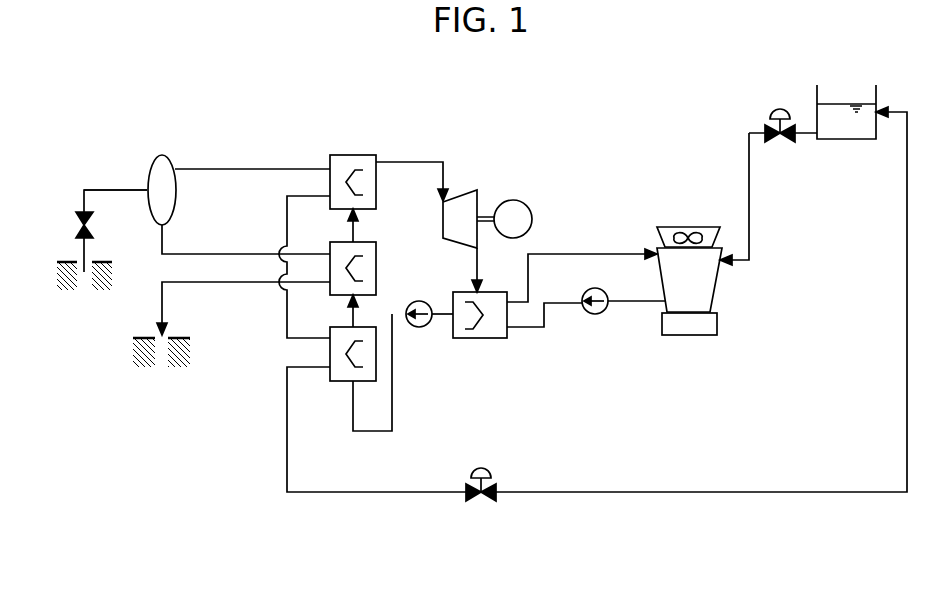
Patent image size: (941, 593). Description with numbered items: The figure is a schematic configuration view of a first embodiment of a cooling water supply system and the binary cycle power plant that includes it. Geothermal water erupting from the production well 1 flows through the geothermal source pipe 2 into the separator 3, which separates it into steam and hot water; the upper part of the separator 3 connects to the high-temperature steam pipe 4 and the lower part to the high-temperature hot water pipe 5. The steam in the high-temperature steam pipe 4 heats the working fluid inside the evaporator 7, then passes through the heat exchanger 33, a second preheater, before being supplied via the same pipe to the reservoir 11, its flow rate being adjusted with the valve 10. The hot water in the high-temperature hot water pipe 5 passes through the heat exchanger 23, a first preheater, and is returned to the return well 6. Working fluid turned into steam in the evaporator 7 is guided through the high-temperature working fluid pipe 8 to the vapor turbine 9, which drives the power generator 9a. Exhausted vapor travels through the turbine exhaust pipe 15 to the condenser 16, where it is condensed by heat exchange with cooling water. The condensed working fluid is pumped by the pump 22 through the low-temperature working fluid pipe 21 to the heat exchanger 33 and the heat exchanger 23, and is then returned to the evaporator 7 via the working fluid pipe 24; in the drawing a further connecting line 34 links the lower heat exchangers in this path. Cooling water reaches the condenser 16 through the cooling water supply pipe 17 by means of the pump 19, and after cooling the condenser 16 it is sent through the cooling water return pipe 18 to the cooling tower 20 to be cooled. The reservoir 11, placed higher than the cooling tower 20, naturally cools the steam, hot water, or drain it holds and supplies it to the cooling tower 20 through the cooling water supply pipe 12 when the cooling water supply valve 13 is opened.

The production well 1 is at (54, 203).
The geothermal source pipe 2 is at (118, 188).
The separator 3 is at (162, 155).
The high-temperature steam pipe 4 is at (208, 168).
The high-temperature hot water pipe 5 is at (213, 254).
The return well 6 is at (147, 322).
The evaporator 7 is at (351, 155).
The high-temperature working fluid pipe 8 is at (400, 162).
The vapor turbine 9 is at (443, 220).
The power generator 9a is at (532, 220).
The valve 10 is at (483, 470).
The reservoir 11 is at (843, 139).
The cooling water supply pipe 12 is at (749, 198).
The cooling water supply valve 13 is at (783, 142).
The turbine exhaust pipe 15 is at (480, 264).
The condenser 16 is at (475, 338).
The cooling water supply pipe 17 is at (532, 327).
The cooling water return pipe 18 is at (624, 254).
The pump 19 is at (593, 314).
The cooling tower 20 is at (716, 285).
The low-temperature working fluid pipe 21 is at (441, 310).
The pump 22 is at (417, 328).
The heat exchanger 23 is at (376, 251).
The working fluid pipe 24 is at (351, 225).
The heat exchanger 33 is at (339, 381).
The connecting line 34 is at (351, 315).